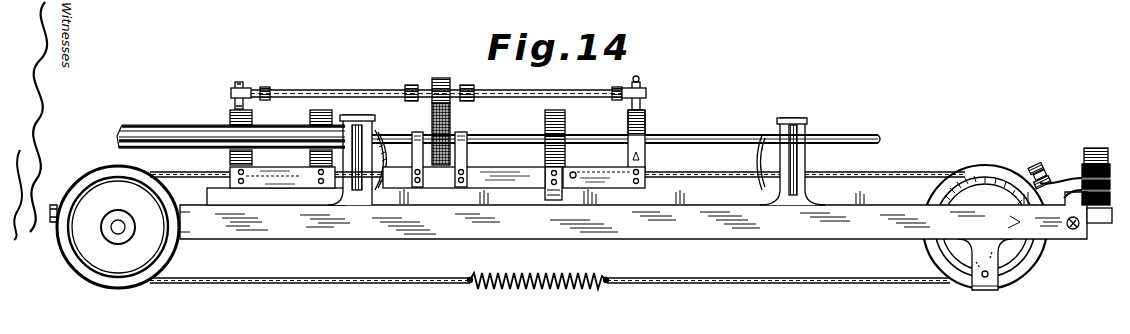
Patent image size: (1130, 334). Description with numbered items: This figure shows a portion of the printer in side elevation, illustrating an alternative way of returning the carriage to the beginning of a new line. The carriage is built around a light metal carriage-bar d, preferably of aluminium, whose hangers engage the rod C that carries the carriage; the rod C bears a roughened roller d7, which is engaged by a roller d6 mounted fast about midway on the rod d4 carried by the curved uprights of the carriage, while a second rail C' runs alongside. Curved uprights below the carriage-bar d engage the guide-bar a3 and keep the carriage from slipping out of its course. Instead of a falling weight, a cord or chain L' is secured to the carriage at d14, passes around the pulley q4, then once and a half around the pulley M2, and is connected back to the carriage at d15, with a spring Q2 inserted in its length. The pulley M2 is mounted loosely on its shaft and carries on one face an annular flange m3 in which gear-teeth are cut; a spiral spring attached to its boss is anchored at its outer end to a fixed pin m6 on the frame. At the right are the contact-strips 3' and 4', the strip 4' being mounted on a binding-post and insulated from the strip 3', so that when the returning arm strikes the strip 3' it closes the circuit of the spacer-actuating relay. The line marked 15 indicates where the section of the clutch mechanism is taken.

The guide-bar a3 is at (646, 224).
The pulley M2 is at (1012, 280).
The fixed pin m6 is at (975, 285).
The rod C' is at (231, 129).
The rod C is at (626, 129).
The rod d4 is at (520, 97).
The carriage connection point d15 is at (565, 170).
The carriage-bar d is at (442, 182).
The carriage attachment point d14 is at (302, 180).
The roughened roller d7 is at (453, 130).
The roller d6 is at (433, 79).
The pulley q4 is at (88, 272).
The cord or chain L' is at (550, 296).
The spring Q2 is at (527, 285).
The contact-strip 3' is at (1087, 163).
The contact-strip 4' is at (1054, 166).
The annular flange m3 is at (337, 328).
The section line 15 is at (845, 333).